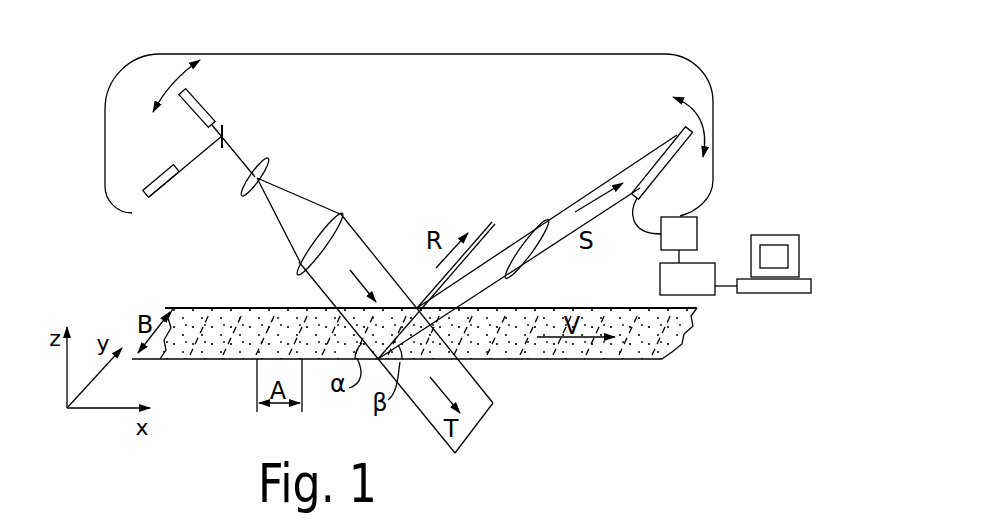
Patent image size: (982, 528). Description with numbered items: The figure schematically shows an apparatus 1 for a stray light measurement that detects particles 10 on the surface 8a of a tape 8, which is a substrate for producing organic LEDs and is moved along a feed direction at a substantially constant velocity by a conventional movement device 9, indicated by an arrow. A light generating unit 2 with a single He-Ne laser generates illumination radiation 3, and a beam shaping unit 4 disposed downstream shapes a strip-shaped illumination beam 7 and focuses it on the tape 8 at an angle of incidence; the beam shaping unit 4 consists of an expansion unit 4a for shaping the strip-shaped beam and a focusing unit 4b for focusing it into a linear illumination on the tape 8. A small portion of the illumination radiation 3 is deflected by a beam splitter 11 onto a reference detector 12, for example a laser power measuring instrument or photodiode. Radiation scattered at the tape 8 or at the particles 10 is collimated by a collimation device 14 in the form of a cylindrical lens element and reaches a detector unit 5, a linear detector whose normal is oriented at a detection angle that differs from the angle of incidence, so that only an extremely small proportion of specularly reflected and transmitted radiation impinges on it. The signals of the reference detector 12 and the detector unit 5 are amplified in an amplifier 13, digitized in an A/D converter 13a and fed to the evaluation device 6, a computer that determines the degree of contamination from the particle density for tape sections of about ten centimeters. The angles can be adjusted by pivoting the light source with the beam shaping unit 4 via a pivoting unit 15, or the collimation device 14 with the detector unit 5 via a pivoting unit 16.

The apparatus 1 is at (105, 75).
The light generating unit 2 is at (205, 97).
The illumination radiation 3 is at (222, 130).
The beam shaping unit 4 is at (264, 222).
The expansion unit 4a is at (244, 190).
The focusing unit 4b is at (300, 258).
The detector unit 5 is at (683, 132).
The evaluation device 6 is at (790, 287).
The strip-shaped illumination beam 7 is at (367, 272).
The tape 8 is at (414, 377).
The surface of the tape 8a is at (213, 333).
The movement device 9 is at (560, 340).
The particles 10 is at (640, 345).
The beam splitter 11 is at (233, 133).
The reference detector 12 is at (152, 201).
The amplifier 13 is at (683, 232).
The A/D converter 13a is at (695, 284).
The collimation device 14 is at (533, 232).
The pivoting unit 15 is at (158, 100).
The pivoting unit 16 is at (707, 123).